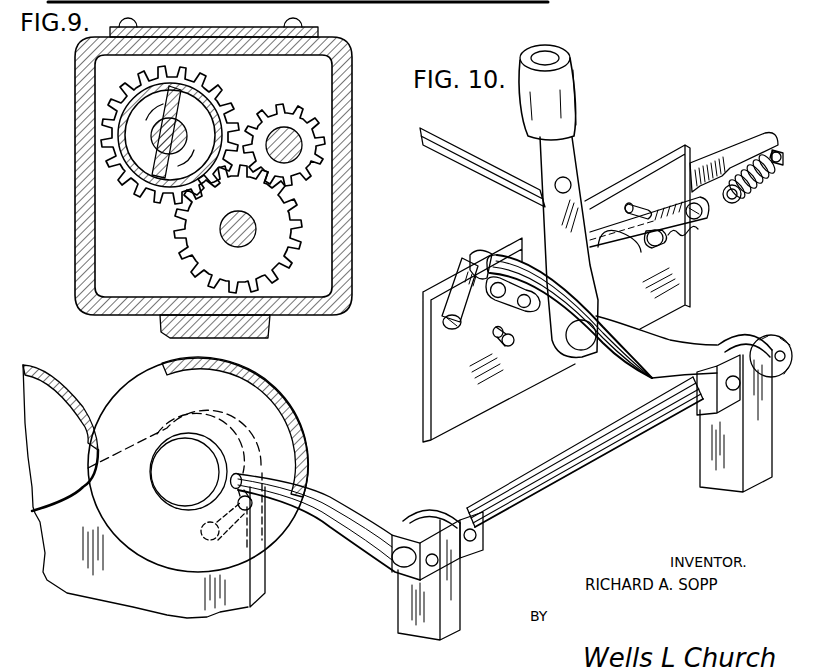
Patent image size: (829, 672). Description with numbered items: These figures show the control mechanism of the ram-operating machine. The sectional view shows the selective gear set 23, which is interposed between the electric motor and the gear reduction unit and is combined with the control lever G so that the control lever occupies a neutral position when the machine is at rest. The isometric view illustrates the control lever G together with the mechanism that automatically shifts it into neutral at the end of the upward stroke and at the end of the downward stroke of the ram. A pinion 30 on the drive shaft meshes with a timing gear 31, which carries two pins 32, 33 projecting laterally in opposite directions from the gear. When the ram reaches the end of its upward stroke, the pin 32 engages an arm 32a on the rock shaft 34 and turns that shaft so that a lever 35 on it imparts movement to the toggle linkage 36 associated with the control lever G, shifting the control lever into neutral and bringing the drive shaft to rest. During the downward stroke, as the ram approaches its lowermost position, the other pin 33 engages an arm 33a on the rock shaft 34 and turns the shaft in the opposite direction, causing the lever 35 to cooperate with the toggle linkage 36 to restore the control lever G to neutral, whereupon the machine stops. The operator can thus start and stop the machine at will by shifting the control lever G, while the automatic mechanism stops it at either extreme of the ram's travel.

In FIG. 9, the selective gear set 23 is at (342, 44).
In FIG. 10, the pinion 30 is at (78, 371).
In FIG. 10, the timing gear 31 is at (277, 388).
In FIG. 10, the pin 32 is at (200, 533).
In FIG. 10, the arm 32a is at (377, 507).
In FIG. 10, the pin 33 is at (249, 509).
In FIG. 10, the arm 33a is at (316, 508).
In FIG. 10, the rock shaft 34 is at (570, 467).
In FIG. 10, the lever 35 is at (637, 345).
In FIG. 10, the toggle linkage 36 is at (603, 256).
In FIG. 10, the control lever G is at (567, 148).